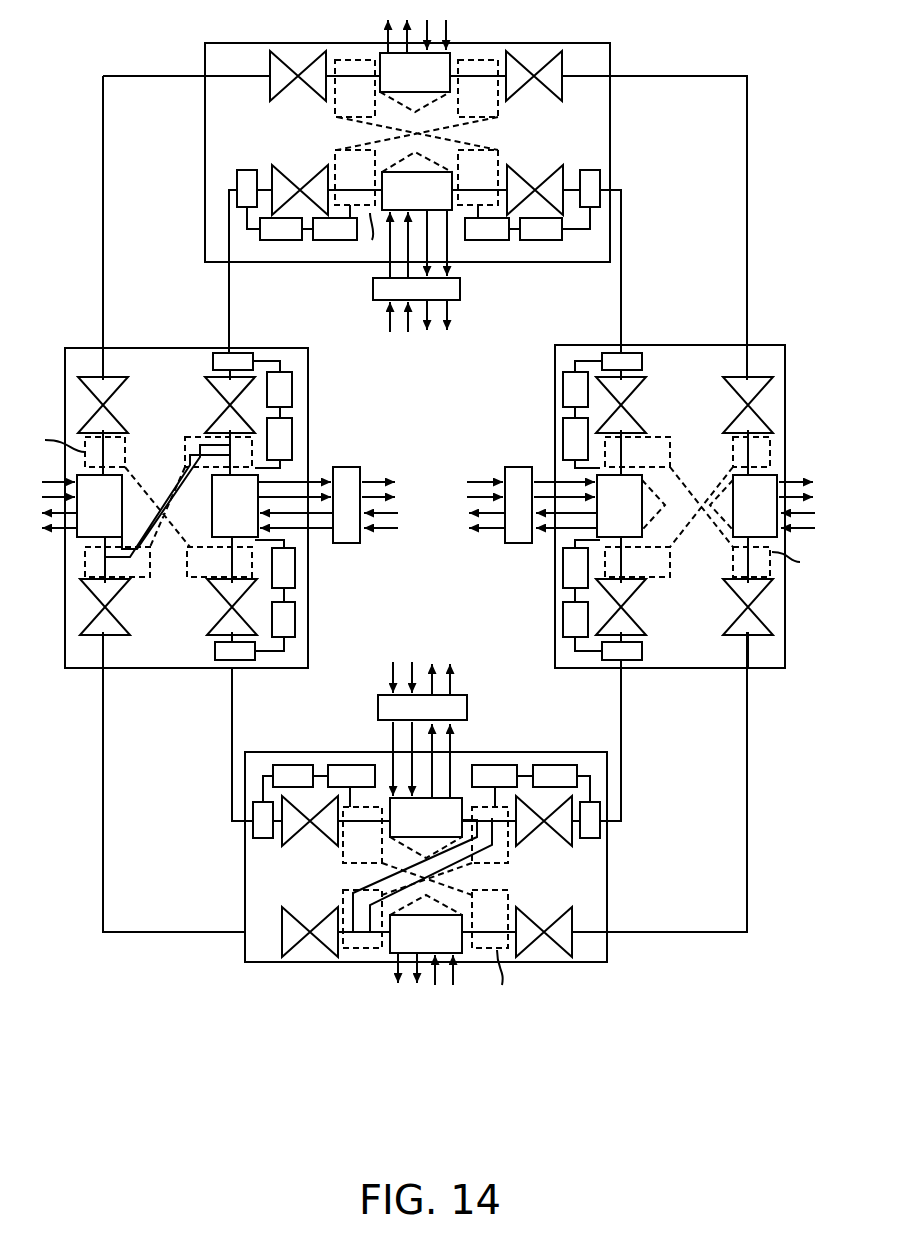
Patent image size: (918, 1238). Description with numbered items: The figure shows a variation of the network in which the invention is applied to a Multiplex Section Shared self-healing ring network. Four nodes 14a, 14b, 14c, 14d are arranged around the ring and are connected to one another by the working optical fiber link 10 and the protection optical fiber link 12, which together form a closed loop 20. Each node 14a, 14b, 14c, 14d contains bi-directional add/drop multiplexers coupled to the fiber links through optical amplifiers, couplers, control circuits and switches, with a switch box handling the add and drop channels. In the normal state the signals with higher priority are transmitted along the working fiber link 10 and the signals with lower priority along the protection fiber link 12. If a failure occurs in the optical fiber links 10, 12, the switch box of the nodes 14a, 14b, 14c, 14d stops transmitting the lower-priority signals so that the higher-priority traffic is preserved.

The working optical fiber link 10 is at (621, 295).
The protection optical fiber link 12 is at (747, 222).
The closed loop 20 is at (103, 832).
The node 14a is at (785, 605).
The node 14b is at (610, 62).
The node 14c is at (65, 655).
The node 14d is at (610, 962).